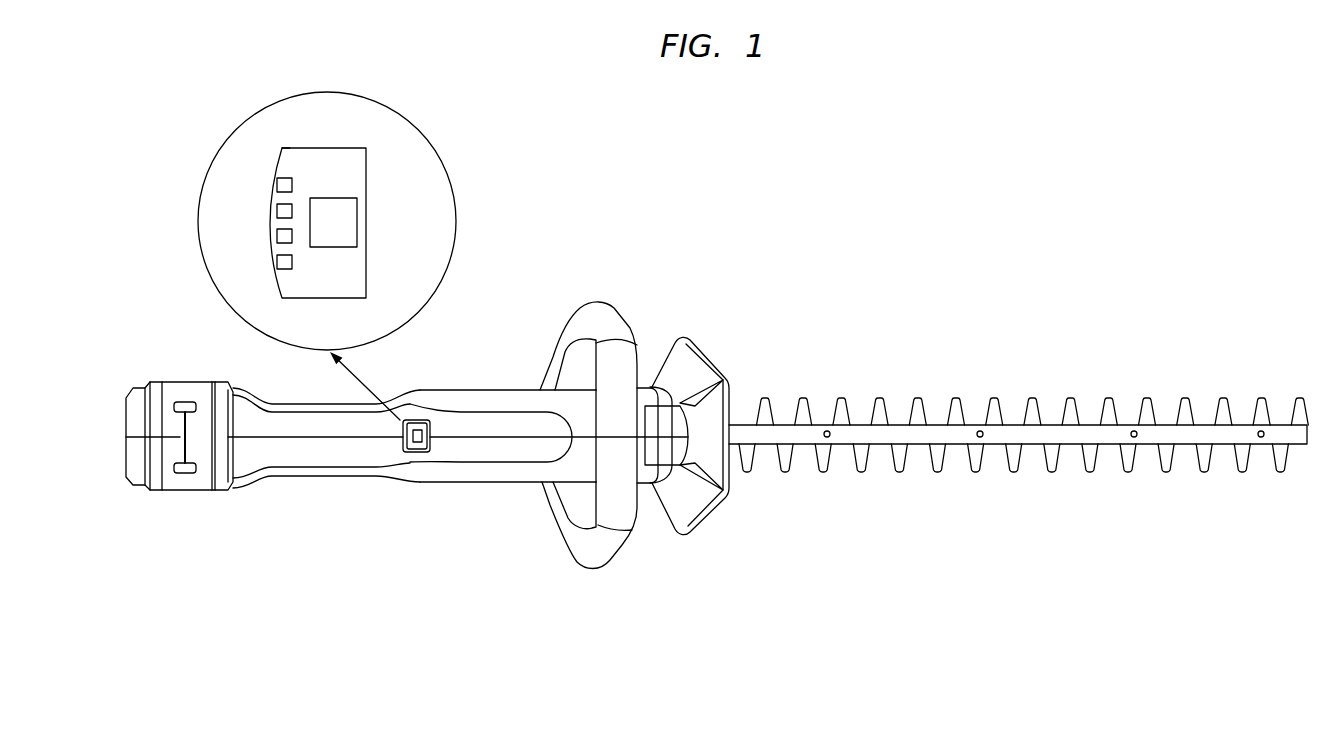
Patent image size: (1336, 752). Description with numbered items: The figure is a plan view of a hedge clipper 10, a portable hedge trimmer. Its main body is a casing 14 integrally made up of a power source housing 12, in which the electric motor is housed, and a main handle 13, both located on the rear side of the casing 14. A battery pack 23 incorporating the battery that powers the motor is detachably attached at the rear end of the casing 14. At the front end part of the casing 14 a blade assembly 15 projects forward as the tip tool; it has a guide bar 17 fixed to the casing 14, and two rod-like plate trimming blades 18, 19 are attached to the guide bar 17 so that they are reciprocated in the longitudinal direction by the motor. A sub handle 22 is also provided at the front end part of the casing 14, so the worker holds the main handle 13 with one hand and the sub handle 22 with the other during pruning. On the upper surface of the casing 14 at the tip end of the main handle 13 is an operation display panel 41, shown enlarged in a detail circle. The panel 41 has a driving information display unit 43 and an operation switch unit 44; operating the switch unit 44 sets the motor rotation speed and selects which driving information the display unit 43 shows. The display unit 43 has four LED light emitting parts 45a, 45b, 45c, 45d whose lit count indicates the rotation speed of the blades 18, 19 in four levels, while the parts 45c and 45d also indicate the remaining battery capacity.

The hedge clipper 10 is at (795, 298).
The power source housing 12 is at (507, 450).
The main handle 13 is at (340, 442).
The casing 14 is at (469, 481).
The blade assembly 15 is at (872, 508).
The guide bar 17 is at (857, 433).
The blade 18 is at (1032, 402).
The blade 19 is at (1013, 458).
The sub handle 22 is at (590, 550).
The battery pack 23 is at (137, 465).
The operation display panel 41 is at (417, 453).
The driving information display unit 43 is at (284, 161).
The operation switch unit 44 is at (340, 223).
The light emitting part 45a is at (277, 183).
The light emitting part 45b is at (277, 209).
The light emitting part 45c is at (277, 235).
The light emitting part 45d is at (277, 261).